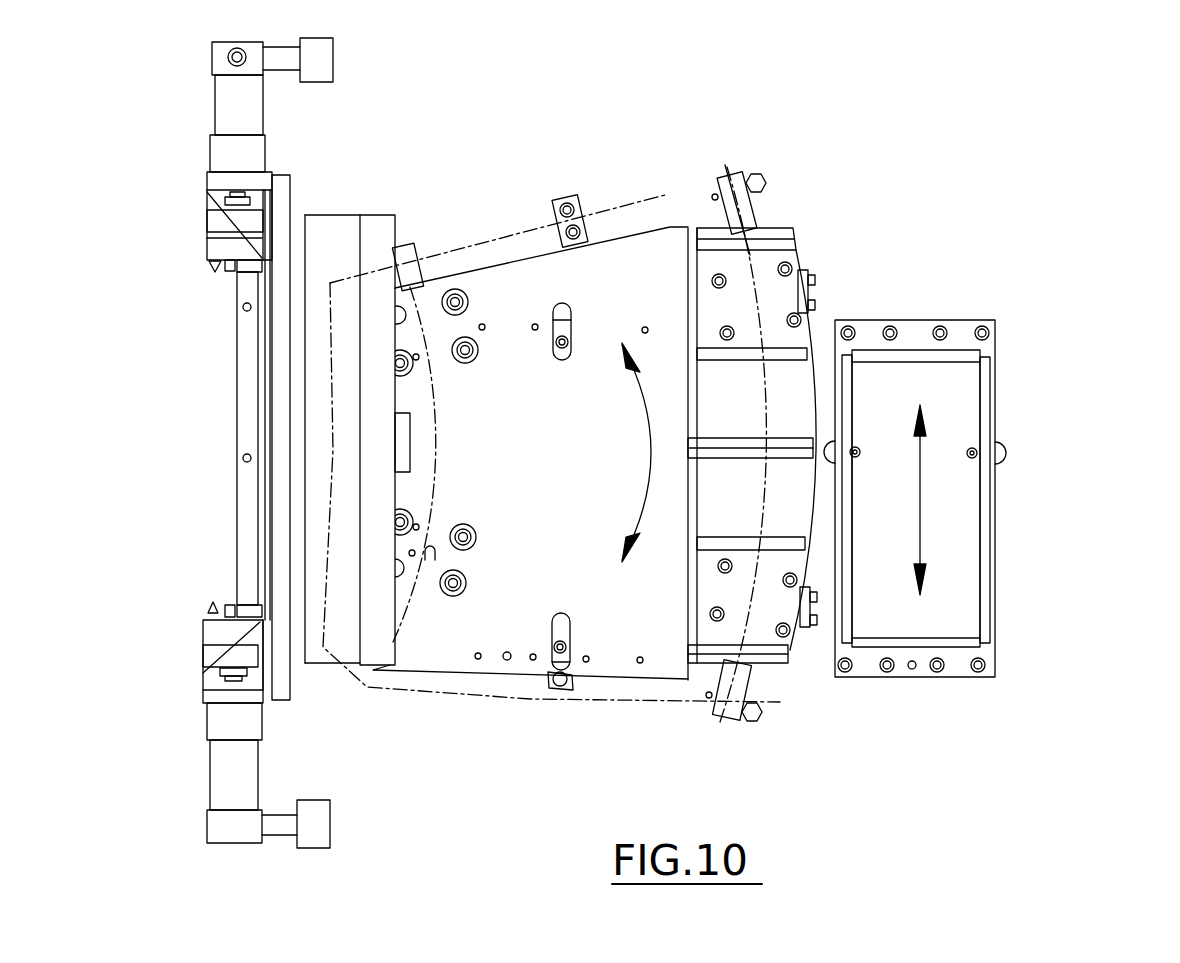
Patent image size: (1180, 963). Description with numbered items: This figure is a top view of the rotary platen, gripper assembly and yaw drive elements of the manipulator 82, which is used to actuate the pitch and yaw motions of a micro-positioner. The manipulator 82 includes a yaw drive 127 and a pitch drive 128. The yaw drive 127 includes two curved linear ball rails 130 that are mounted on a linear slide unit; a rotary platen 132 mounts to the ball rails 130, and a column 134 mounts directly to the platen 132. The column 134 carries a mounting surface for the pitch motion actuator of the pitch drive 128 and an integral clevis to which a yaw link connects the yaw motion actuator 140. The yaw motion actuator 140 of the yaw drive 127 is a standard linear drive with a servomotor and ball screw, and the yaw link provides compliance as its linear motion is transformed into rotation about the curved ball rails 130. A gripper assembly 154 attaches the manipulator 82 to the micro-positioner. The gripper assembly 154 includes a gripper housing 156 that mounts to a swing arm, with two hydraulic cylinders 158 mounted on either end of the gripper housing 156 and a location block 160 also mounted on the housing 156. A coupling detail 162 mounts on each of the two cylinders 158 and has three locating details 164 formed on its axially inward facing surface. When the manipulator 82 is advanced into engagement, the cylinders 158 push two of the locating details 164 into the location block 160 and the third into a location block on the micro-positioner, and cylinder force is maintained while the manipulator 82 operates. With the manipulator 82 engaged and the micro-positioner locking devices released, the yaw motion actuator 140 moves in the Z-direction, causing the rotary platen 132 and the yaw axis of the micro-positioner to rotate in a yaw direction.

The manipulator 82 is at (803, 222).
The yaw drive 127 is at (1008, 331).
The pitch drive 128 is at (495, 230).
The curved linear ball rails 130 is at (412, 243).
The rotary platen 132 is at (602, 458).
The column 134 is at (497, 207).
The yaw motion actuator 140 is at (963, 497).
The gripper assembly 154 is at (200, 713).
The gripper housing 156 is at (280, 380).
The hydraulic cylinders 158 is at (222, 96).
The location block 160 is at (240, 490).
The coupling detail 162 is at (222, 240).
The locating details 164 is at (213, 268).